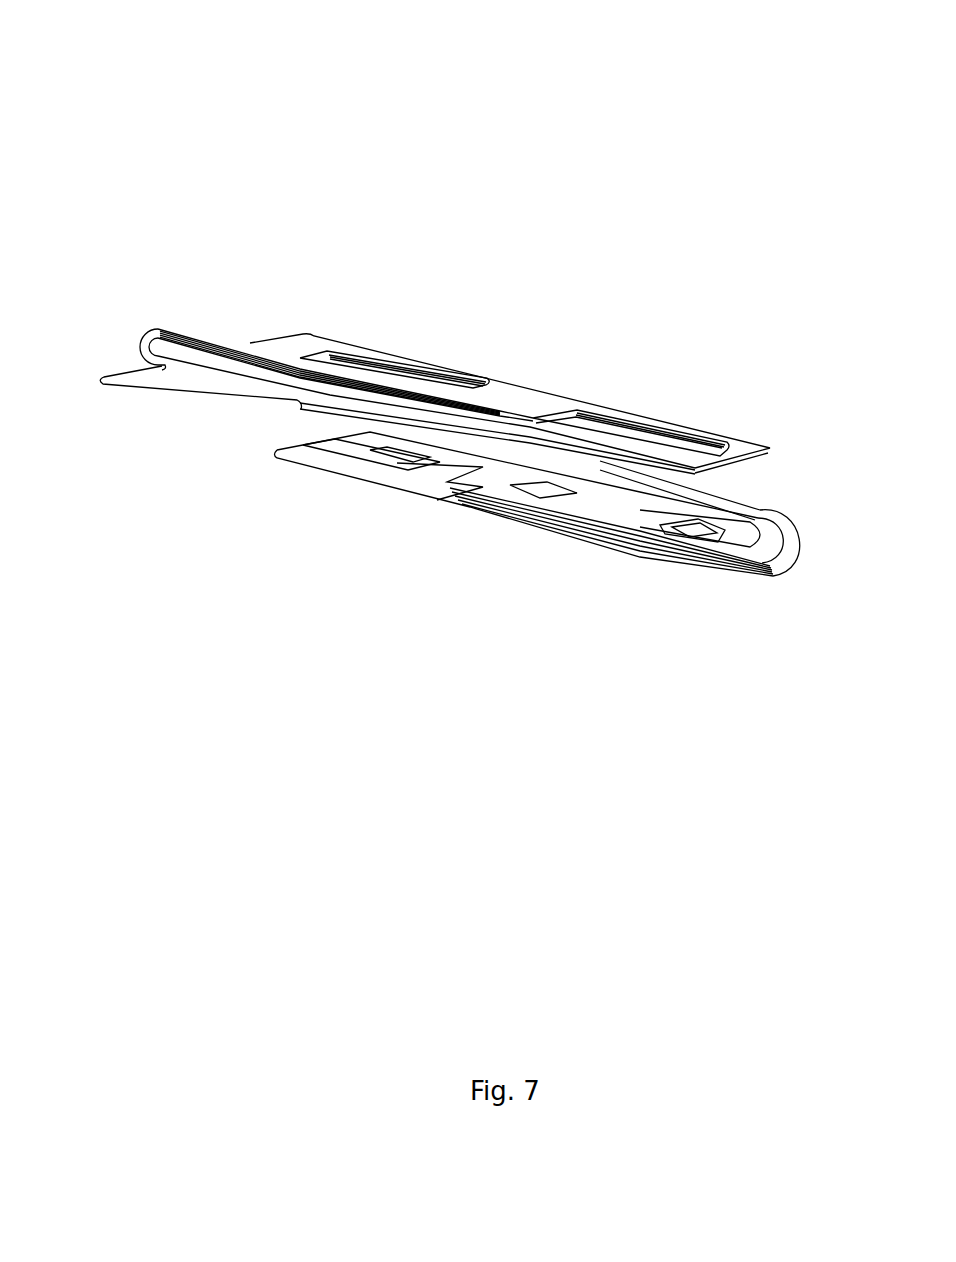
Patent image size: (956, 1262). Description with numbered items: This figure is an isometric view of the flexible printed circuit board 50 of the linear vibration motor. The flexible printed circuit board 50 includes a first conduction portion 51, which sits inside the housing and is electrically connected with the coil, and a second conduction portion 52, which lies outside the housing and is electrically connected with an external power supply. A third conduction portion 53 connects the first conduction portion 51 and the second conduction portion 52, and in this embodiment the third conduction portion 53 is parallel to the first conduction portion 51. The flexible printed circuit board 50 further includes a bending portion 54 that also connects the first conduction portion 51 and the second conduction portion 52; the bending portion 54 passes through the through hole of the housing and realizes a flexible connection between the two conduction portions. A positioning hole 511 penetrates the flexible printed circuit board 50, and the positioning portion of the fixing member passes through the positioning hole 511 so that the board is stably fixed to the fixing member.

The flexible printed circuit board 50 is at (502, 51).
The first conduction portion 51 is at (495, 470).
The positioning hole 511 is at (693, 525).
The second conduction portion 52 is at (494, 395).
The third conduction portion 53 is at (153, 378).
The bending portion 54 is at (437, 428).